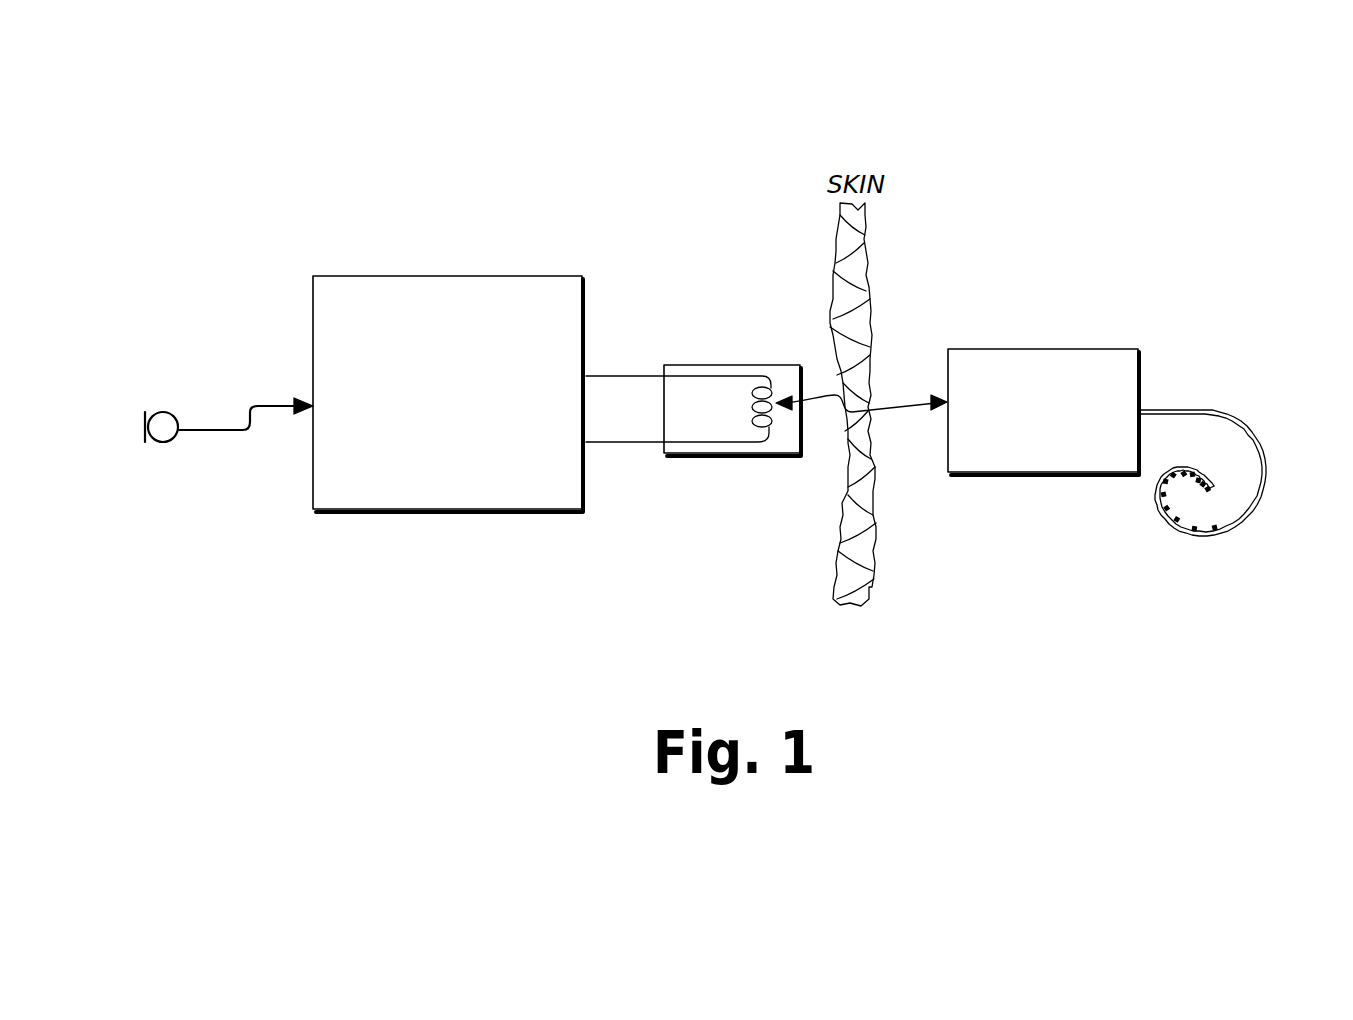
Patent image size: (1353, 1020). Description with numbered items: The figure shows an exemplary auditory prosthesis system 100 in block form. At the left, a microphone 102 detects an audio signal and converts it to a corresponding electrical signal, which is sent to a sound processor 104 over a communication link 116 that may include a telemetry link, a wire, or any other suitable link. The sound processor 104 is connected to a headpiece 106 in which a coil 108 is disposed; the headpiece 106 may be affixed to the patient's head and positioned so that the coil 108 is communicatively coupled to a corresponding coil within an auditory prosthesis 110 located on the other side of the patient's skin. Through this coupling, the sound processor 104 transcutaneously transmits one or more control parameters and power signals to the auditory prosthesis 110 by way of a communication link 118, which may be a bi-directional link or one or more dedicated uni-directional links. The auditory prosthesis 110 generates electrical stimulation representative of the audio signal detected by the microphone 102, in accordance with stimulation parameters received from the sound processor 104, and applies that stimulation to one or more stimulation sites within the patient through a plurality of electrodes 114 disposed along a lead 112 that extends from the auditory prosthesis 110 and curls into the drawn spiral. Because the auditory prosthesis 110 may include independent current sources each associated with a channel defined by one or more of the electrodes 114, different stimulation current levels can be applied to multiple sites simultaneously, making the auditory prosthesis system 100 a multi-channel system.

The auditory prosthesis system 100 is at (267, 131).
The microphone 102 is at (168, 441).
The sound processor 104 is at (426, 421).
The headpiece 106 is at (737, 364).
The coil 108 is at (770, 430).
The auditory prosthesis 110 is at (1022, 449).
The lead 112 is at (1255, 510).
The electrodes 114 is at (1177, 528).
The communication link 116 is at (244, 433).
The communication link 118 is at (893, 397).